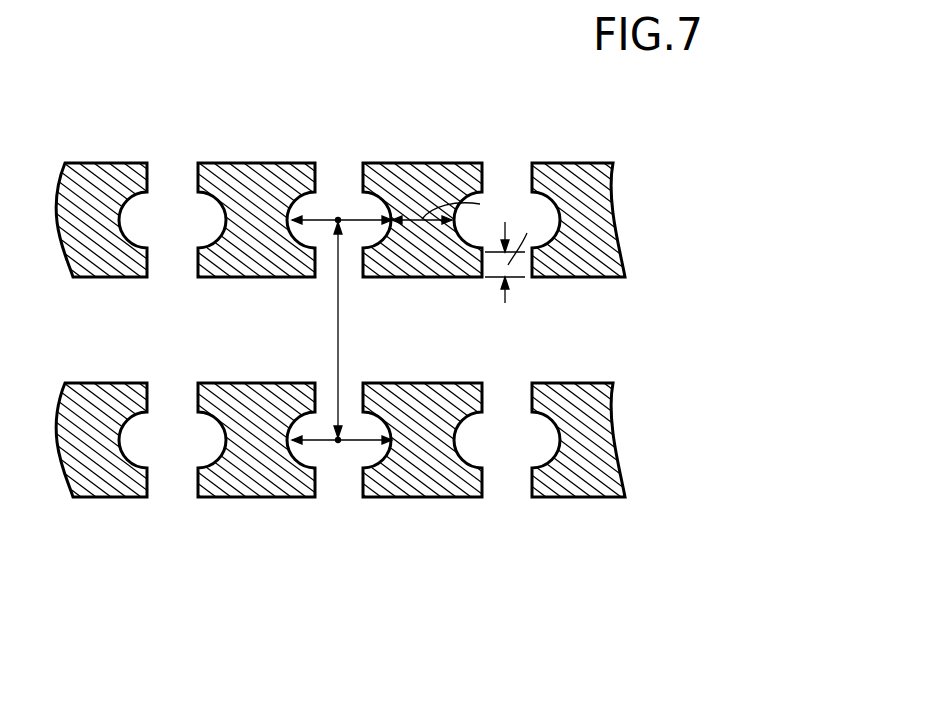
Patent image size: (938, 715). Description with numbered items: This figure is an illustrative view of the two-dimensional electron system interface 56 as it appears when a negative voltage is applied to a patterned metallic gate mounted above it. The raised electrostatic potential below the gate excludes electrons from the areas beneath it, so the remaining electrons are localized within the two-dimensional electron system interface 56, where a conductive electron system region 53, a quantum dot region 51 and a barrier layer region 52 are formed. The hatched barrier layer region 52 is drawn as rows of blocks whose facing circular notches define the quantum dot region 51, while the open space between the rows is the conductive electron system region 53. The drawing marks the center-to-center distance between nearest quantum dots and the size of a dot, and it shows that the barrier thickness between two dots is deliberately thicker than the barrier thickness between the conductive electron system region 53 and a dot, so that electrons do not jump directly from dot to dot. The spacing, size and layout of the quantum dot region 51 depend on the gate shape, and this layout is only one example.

The quantum dot region 51 is at (170, 222).
The barrier layer region 52 is at (170, 313).
The conductive electron system region 53 is at (500, 335).
The two-dimensional electron system interface 56 is at (188, 523).